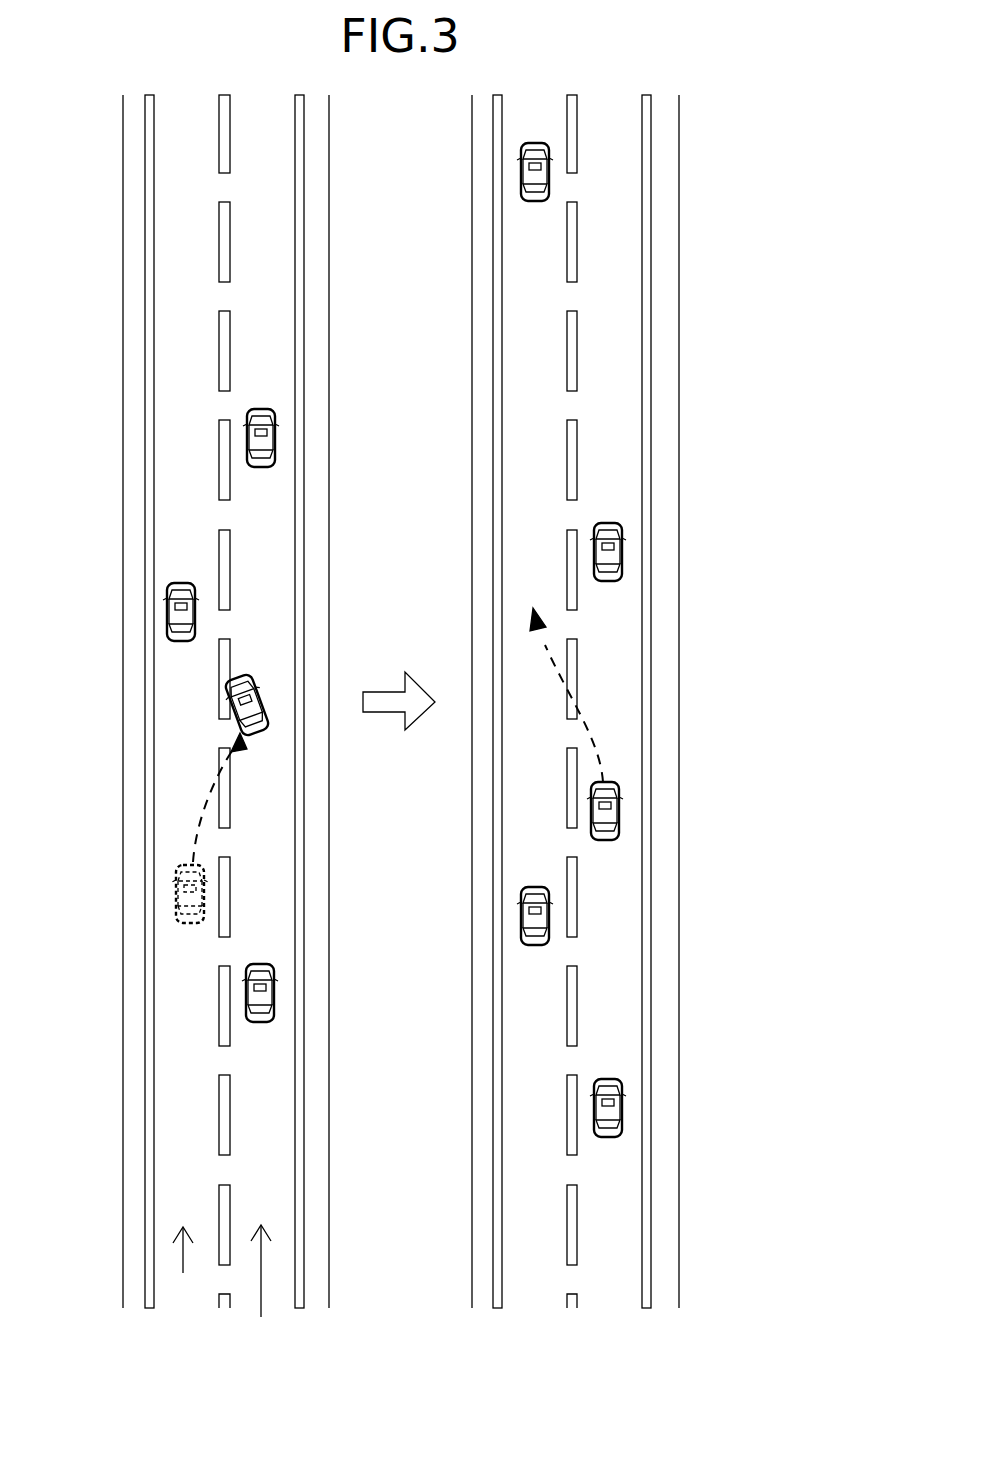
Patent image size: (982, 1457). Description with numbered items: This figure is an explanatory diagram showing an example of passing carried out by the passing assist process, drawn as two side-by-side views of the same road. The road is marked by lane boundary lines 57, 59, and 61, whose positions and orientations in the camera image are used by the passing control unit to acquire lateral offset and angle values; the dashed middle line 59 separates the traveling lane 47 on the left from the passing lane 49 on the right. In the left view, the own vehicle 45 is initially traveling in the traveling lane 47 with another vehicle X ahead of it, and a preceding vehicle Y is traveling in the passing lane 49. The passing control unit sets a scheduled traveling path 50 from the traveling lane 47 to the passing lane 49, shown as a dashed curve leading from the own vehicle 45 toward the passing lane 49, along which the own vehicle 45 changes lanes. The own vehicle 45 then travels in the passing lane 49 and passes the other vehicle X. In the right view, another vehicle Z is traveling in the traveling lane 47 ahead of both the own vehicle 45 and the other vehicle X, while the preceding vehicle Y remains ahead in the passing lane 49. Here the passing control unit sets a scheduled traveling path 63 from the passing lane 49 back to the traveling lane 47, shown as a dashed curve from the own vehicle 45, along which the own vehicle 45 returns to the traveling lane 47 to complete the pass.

The own vehicle 45 is at (262, 708).
The traveling lane 47 is at (532, 1343).
The passing lane 49 is at (607, 1292).
The scheduled traveling path 50 is at (218, 806).
The lane boundary line 57 is at (150, 254).
The lane boundary line 59 is at (226, 235).
The lane boundary line 61 is at (298, 311).
The scheduled traveling path 63 is at (546, 657).
The other vehicle X is at (167, 602).
The preceding vehicle Y is at (275, 432).
The other vehicle Z is at (520, 166).